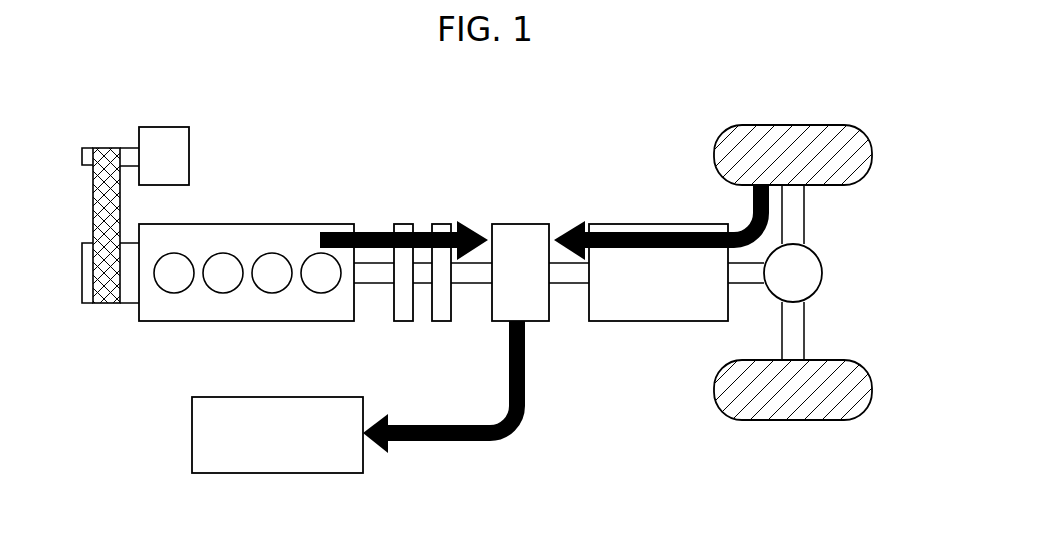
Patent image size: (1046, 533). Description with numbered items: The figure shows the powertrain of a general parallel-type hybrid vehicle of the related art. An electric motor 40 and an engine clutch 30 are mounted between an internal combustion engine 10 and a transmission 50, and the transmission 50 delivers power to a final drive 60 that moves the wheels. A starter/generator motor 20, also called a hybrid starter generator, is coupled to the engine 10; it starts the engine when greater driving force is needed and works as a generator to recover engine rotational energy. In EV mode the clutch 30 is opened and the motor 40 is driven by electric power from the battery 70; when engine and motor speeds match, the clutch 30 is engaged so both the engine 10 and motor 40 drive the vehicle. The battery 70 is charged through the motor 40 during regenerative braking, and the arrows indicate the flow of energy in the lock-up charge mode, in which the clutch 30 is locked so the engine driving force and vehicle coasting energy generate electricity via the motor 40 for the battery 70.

The internal combustion engine 10 is at (316, 223).
The starter/generator motor 20 is at (191, 137).
The engine clutch 30 is at (447, 223).
The electric motor 40 is at (510, 223).
The transmission 50 is at (687, 223).
The final drive 60 is at (823, 250).
The battery 70 is at (322, 395).